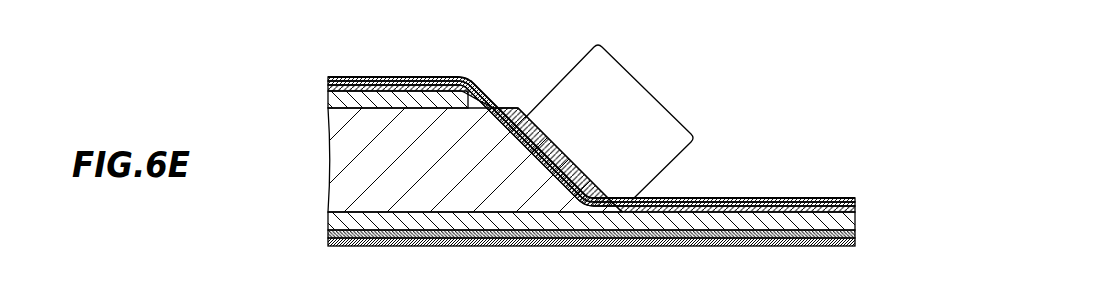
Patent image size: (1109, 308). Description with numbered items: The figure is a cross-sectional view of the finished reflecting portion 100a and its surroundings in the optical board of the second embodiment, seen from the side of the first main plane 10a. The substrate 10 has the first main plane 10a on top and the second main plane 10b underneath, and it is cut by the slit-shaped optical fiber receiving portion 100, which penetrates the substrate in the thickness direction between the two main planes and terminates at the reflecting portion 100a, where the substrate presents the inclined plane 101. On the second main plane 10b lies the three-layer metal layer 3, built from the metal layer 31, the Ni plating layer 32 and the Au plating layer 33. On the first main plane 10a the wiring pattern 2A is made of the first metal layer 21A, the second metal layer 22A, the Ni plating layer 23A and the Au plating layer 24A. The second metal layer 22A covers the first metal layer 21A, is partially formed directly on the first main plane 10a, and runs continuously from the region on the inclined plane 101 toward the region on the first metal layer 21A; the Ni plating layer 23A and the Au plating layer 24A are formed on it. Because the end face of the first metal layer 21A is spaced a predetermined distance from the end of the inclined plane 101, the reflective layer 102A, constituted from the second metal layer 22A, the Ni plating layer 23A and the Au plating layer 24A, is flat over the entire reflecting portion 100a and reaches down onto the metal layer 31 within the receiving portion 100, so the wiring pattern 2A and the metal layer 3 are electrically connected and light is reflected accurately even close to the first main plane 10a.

The optical fiber receiving portion 100 is at (844, 147).
The light reflecting portion 100a is at (665, 48).
The inclined plane 101 is at (588, 185).
The reflective layer 102A is at (650, 90).
The substrate 10 is at (335, 166).
The first main plane 10a is at (405, 108).
The second main plane 10b is at (390, 214).
The wiring pattern 2A is at (242, 33).
The first metal layer 21A is at (328, 100).
The second metal layer 22A is at (328, 88).
The Ni plating layer 23A is at (328, 83).
The Au plating layer 24A is at (328, 79).
The metal layer 3 is at (260, 208).
The metal layer 31 is at (328, 226).
The Ni plating layer 32 is at (328, 236).
The Au plating layer 33 is at (328, 244).